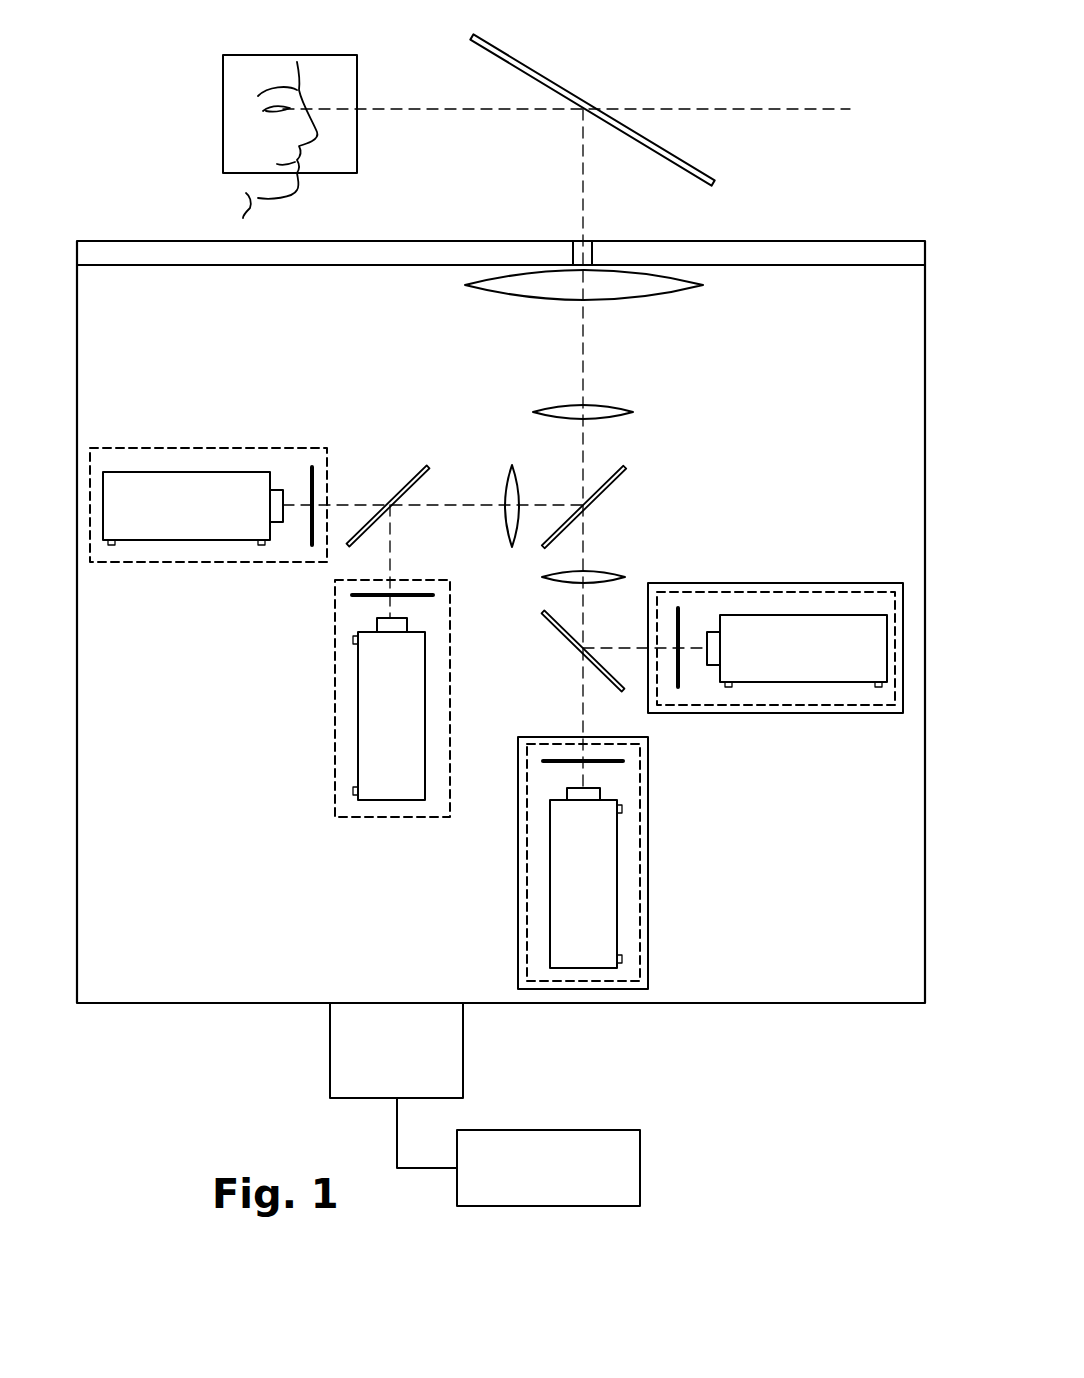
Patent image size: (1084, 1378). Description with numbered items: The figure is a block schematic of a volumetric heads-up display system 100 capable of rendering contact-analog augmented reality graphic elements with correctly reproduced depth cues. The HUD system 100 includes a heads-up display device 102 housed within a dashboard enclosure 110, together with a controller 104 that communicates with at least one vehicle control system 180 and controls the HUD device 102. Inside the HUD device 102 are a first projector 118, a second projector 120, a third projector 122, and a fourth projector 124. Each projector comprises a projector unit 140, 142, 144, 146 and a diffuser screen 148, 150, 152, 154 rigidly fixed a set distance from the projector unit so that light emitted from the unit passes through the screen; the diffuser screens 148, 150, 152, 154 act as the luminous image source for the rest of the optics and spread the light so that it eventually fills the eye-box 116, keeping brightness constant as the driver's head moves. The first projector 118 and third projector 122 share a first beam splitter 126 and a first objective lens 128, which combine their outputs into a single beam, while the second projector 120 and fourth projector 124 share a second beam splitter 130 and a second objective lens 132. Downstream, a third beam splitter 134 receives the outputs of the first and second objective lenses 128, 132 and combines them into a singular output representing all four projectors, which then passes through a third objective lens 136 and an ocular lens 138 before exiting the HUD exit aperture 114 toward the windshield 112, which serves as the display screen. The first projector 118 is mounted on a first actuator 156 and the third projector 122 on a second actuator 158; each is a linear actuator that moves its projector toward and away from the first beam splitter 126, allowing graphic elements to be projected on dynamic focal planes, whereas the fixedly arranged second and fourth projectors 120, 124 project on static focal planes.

The volumetric heads-up display system 100 is at (318, 1086).
The heads-up display device 102 is at (644, 1003).
The controller 104 is at (463, 1048).
The dashboard enclosure 110 is at (874, 255).
The windshield 112 is at (578, 93).
The HUD exit aperture 114 is at (596, 252).
The eye-box 116 is at (223, 121).
The first projector 118 is at (648, 836).
The second projector 120 is at (166, 448).
The third projector 122 is at (805, 592).
The fourth projector 124 is at (335, 662).
The first beam splitter 126 is at (560, 632).
The first objective lens 128 is at (586, 575).
The second beam splitter 130 is at (416, 476).
The second objective lens 132 is at (508, 476).
The third beam splitter 134 is at (612, 478).
The third objective lens 136 is at (597, 410).
The ocular lens 138 is at (681, 290).
The projector unit 140 is at (600, 914).
The projector unit 142 is at (245, 472).
The projector unit 144 is at (848, 636).
The projector unit 146 is at (372, 728).
The diffuser screen 148 is at (550, 763).
The diffuser screen 150 is at (311, 467).
The diffuser screen 152 is at (680, 620).
The diffuser screen 154 is at (367, 598).
The first actuator 156 is at (650, 792).
The second actuator 158 is at (855, 713).
The vehicle control system 180 is at (640, 1165).